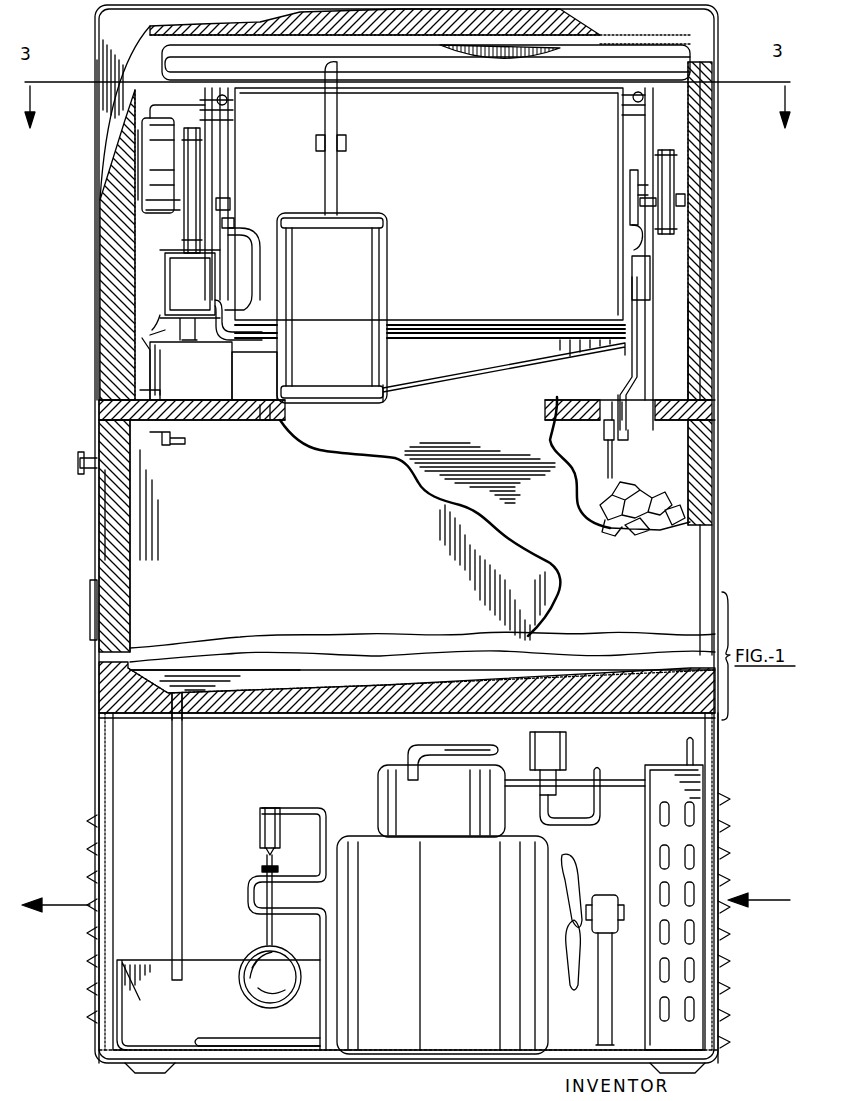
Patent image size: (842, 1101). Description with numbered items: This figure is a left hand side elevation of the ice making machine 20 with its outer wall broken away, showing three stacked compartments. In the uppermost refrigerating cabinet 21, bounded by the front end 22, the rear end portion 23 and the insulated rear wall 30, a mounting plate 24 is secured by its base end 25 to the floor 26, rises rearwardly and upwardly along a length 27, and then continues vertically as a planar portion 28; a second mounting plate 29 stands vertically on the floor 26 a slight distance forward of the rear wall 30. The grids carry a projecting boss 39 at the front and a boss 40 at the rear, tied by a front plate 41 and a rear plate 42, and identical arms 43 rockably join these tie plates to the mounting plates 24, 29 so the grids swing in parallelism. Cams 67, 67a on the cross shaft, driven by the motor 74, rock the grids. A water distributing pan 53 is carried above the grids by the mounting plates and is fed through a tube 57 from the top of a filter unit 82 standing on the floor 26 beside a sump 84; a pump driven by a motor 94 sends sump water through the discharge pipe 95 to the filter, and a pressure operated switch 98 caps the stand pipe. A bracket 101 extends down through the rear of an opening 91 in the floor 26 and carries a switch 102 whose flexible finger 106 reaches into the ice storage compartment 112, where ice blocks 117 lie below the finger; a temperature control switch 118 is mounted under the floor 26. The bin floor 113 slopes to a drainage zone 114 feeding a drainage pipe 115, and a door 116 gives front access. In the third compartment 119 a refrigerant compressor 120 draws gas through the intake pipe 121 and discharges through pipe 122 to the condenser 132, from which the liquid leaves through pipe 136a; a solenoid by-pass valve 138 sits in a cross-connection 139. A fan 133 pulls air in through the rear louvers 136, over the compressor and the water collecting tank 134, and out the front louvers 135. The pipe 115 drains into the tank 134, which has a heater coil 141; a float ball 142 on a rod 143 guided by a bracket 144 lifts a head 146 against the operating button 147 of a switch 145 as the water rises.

The machine 20 is at (92, 144).
The refrigerating cabinet 21 is at (488, 169).
The front end of cabinet 22 is at (135, 374).
The rear end portion of cabinet 23 is at (674, 382).
The mounting plate 24 is at (222, 240).
The base end 25 is at (148, 327).
The floor 26 is at (600, 398).
The length of plate 27 is at (160, 320).
The planar portion 28 is at (212, 150).
The second mounting plate 29 is at (656, 263).
The rear wall 30 is at (708, 202).
The projecting boss 39 is at (232, 226).
The projecting boss 40 is at (628, 185).
The plate 41 is at (228, 208).
The plate 42 is at (639, 238).
The arms 43 is at (222, 112).
The water distributing pan 53 is at (608, 46).
The tube 57 is at (338, 200).
The cam 67 is at (198, 185).
The cam 67a is at (668, 172).
The driving motor 74 is at (158, 133).
The filter unit 82 is at (350, 292).
The sump 84 is at (205, 390).
The opening 91 is at (262, 422).
The motor 94 is at (198, 298).
The discharge pipe 95 is at (234, 322).
The pressure operated switch 98 is at (326, 142).
The bracket 101 is at (640, 352).
The switch 102 is at (606, 440).
The flexible finger 106 is at (613, 469).
The ice storage compartment 112 is at (234, 550).
The floor of bin 113 is at (290, 690).
The drainage zone 114 is at (186, 658).
The drainage pipe 115 is at (180, 765).
The door 116 is at (98, 562).
The ice blocks 117 is at (600, 524).
The temperature control switch 118 is at (184, 440).
The third compartment 119 is at (292, 750).
The refrigerant compressor 120 is at (410, 1032).
The intake pipe 121 is at (446, 747).
The pipe 122 is at (638, 786).
The condenser 132 is at (648, 849).
The fan 133 is at (578, 980).
The water collecting tank 134 is at (170, 975).
The machine louvers 135 is at (95, 930).
The louvers 136 is at (722, 832).
The pipe 136a is at (688, 745).
The solenoid controlled by-pass valve 138 is at (548, 753).
The cross-connection 139 is at (598, 820).
The heater coil 141 is at (200, 1042).
The float ball 142 is at (256, 976).
The rod 143 is at (266, 933).
The bracket 144 is at (322, 864).
The switch 145 is at (266, 818).
The head 146 is at (262, 869).
The operating button 147 is at (264, 850).